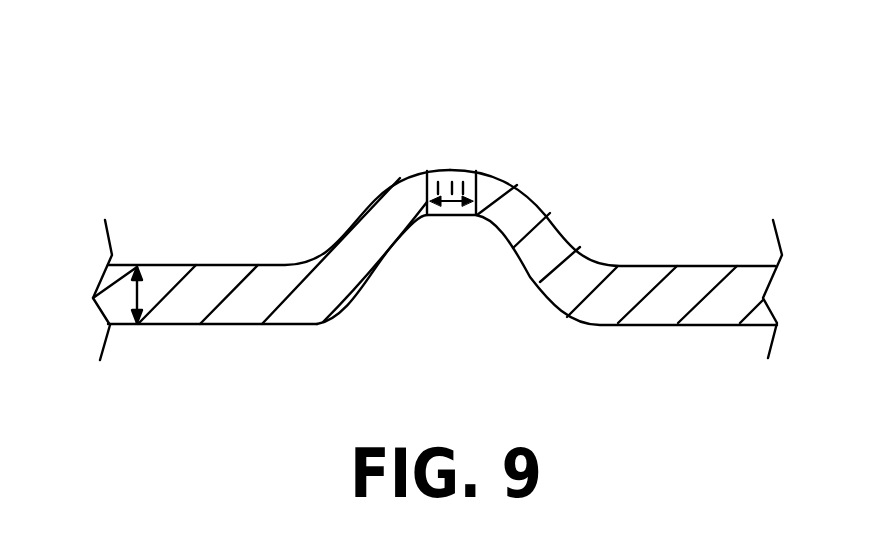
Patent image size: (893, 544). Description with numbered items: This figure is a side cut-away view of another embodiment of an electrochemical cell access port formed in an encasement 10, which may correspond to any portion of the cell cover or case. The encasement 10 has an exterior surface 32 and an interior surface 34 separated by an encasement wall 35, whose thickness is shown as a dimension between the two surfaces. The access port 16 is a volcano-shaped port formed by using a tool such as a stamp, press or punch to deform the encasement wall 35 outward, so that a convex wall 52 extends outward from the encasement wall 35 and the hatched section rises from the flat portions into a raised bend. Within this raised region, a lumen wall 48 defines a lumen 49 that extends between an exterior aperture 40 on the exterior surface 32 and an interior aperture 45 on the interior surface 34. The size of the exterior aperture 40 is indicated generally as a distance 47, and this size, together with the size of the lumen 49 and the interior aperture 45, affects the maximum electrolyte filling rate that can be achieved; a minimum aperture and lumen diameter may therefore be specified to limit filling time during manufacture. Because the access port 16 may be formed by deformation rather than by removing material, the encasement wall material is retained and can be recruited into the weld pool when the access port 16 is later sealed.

The encasement 10 is at (675, 266).
The access port 16 is at (615, 162).
The exterior surface 32 is at (197, 265).
The interior surface 34 is at (243, 326).
The encasement wall 35 is at (137, 296).
The exterior aperture 40 is at (449, 171).
The interior aperture 45 is at (446, 216).
The distance 47 is at (450, 180).
The lumen wall 48 is at (397, 248).
The lumen 49 is at (466, 198).
The convex wall 52 is at (335, 230).